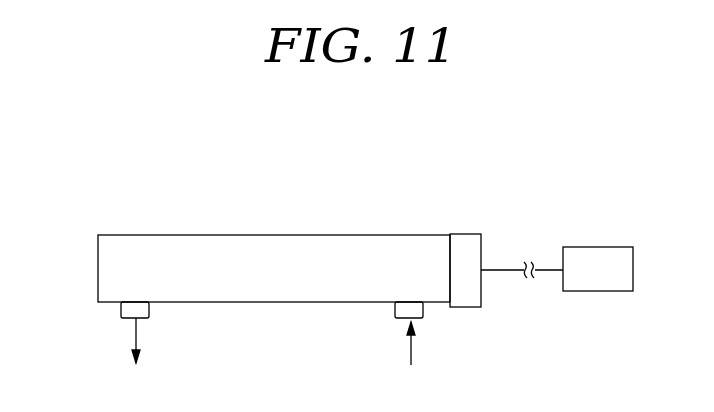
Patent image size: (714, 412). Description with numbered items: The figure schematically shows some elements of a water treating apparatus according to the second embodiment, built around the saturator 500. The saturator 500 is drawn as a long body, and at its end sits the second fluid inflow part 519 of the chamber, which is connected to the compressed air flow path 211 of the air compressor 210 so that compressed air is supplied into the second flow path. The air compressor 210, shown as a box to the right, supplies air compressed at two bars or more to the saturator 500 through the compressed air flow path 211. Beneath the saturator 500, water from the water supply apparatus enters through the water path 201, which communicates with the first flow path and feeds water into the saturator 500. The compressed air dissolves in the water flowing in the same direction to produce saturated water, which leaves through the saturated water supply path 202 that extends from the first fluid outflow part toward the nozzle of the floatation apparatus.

The saturator 500 is at (258, 236).
The second fluid inflow part 519 is at (464, 233).
The compressed air flow path 211 is at (507, 269).
The air compressor 210 is at (598, 247).
The saturated water supply path 202 is at (132, 335).
The water path 201 is at (411, 349).